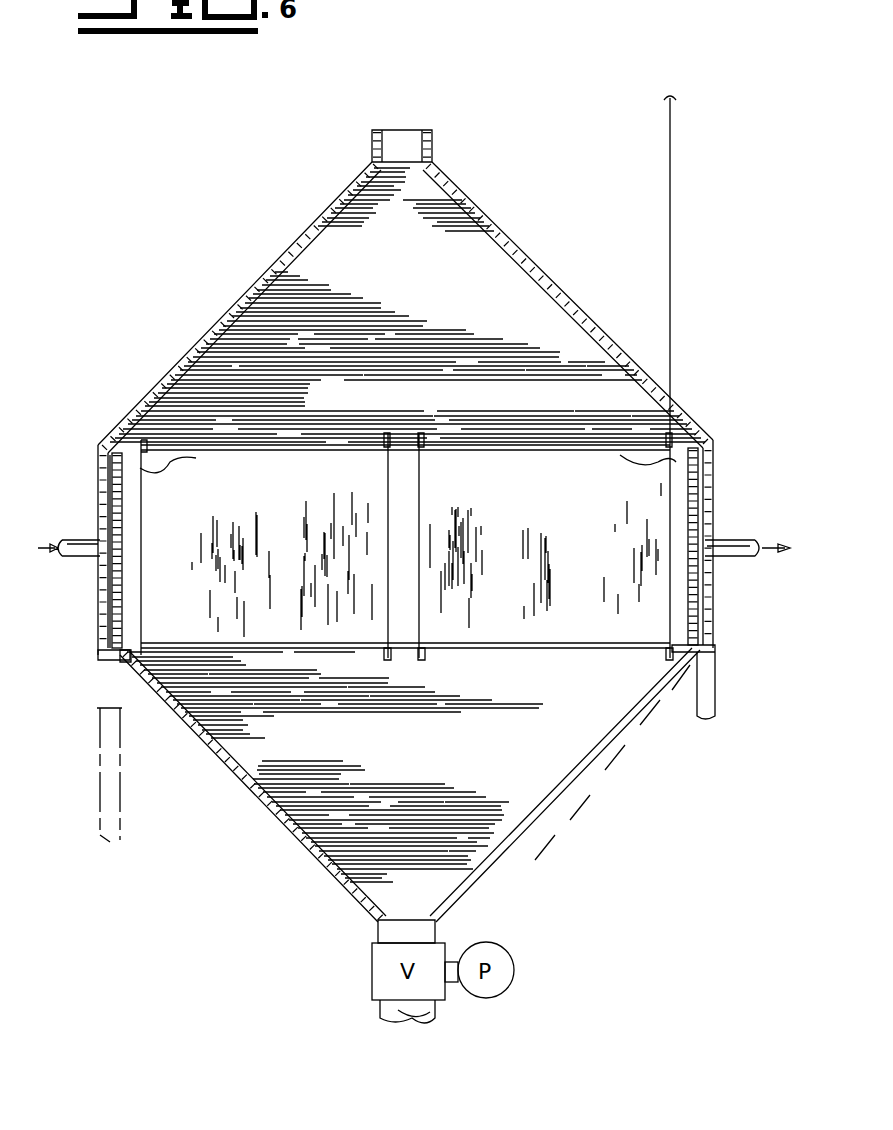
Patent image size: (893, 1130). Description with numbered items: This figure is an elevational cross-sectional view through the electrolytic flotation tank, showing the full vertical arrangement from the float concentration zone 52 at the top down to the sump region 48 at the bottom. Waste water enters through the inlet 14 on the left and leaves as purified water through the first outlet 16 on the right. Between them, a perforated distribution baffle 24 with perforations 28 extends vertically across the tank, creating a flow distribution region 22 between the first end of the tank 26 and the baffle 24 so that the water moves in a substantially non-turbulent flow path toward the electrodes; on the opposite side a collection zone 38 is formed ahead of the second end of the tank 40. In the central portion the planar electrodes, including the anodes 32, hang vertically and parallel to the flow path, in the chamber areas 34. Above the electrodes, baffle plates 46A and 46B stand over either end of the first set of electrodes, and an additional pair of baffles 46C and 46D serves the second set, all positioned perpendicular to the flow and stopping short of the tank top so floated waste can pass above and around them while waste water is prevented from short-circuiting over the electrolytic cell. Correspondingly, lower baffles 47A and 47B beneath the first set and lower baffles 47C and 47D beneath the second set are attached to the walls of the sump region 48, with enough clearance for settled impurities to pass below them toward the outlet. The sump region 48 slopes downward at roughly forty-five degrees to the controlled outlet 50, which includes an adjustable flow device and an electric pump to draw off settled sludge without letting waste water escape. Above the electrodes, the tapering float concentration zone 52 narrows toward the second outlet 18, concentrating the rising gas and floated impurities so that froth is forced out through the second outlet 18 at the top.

The inlet 14 is at (78, 560).
The first outlet 16 is at (735, 540).
The second outlet 18 is at (418, 152).
The flow distribution region 22 is at (100, 516).
The distribution baffle 24 is at (112, 500).
The first end of the tank 26 is at (106, 643).
The perforations 28 is at (119, 486).
The anodes 32 is at (170, 453).
The chamber 34 is at (248, 488).
The collection zone 38 is at (705, 463).
The second end of the tank 40 is at (713, 632).
The baffle plate 46A is at (146, 440).
The baffle plate 46B is at (386, 440).
The baffle 46C is at (422, 440).
The baffle 46D is at (660, 440).
The lower baffle 47A is at (128, 660).
The lower baffle 47B is at (392, 660).
The lower baffle 47C is at (425, 658).
The lower baffle 47D is at (668, 658).
The sump region 48 is at (512, 795).
The controlled outlet 50 is at (418, 906).
The float concentration zone 52 is at (503, 272).